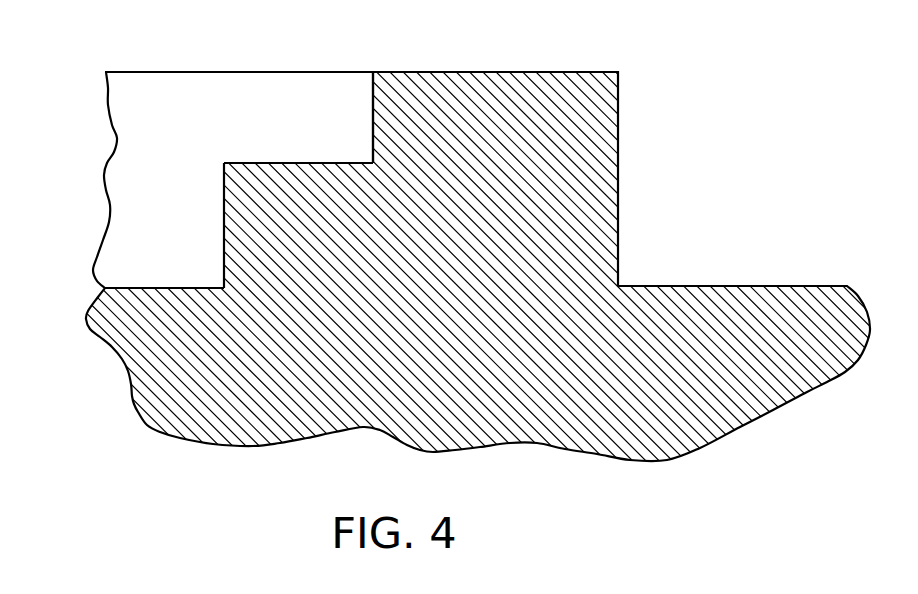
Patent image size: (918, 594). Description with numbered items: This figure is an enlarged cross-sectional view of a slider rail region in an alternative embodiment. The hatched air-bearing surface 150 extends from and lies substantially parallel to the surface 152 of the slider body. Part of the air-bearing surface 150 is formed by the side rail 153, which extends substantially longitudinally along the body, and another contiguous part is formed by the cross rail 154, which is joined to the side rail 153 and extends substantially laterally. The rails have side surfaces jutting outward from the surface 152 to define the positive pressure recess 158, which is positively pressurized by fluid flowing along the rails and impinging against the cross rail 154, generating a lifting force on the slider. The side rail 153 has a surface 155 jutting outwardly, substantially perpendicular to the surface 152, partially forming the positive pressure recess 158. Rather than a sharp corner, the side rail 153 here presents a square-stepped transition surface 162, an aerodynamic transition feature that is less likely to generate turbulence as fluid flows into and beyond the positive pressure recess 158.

The air-bearing surface 150 is at (557, 72).
The surface of the body 152 is at (160, 287).
The side rail 153 is at (452, 107).
The cross rail 154 is at (228, 90).
The surface 155 is at (373, 130).
The positive pressure recess 158 is at (140, 209).
The square-stepped transition surface 162 is at (223, 162).